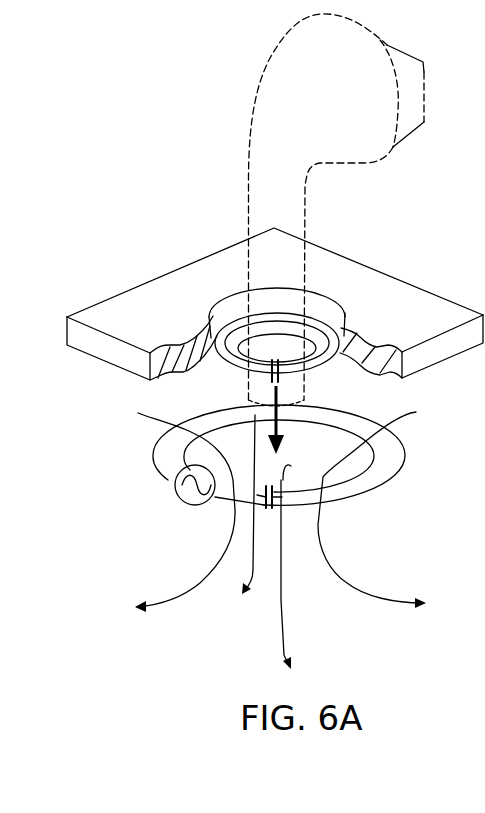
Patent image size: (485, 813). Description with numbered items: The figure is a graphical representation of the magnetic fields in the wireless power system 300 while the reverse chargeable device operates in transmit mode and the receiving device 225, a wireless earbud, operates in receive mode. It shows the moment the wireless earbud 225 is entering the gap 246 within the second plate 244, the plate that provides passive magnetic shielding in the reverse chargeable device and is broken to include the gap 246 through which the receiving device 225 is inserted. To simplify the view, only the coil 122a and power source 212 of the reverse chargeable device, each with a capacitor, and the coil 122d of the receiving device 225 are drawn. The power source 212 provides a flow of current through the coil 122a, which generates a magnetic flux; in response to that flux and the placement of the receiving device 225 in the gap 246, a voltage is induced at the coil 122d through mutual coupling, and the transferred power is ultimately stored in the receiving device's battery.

The wireless power system 300 is at (88, 168).
The receiving device 225 is at (265, 72).
The second plate 244 is at (105, 313).
The gap 246 is at (318, 282).
The coil 122d is at (222, 337).
The coil 122a is at (153, 453).
The power source 212 is at (175, 497).